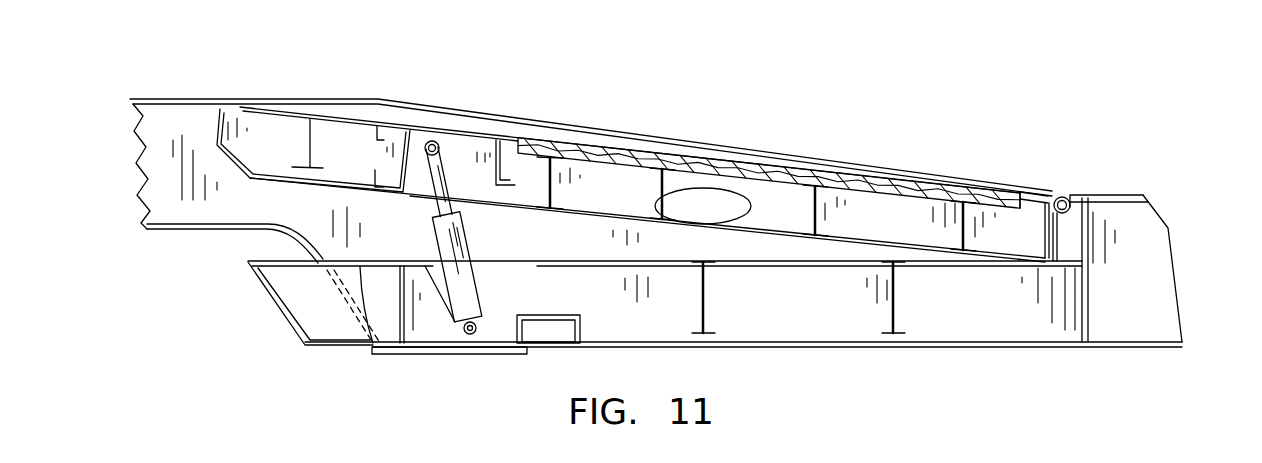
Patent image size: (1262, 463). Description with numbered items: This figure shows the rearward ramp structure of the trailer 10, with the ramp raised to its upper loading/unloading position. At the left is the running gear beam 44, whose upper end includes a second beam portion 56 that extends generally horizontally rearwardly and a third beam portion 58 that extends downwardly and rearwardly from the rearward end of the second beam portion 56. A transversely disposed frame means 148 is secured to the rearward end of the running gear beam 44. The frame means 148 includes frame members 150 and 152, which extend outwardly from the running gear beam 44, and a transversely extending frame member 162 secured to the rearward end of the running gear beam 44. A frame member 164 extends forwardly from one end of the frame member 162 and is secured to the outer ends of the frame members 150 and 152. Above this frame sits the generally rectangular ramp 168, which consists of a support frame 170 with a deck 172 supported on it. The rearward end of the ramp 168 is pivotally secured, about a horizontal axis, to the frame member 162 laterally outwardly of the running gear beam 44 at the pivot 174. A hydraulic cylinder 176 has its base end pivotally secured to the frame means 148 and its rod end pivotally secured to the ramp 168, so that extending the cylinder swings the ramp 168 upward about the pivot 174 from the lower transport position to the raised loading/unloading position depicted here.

The trailer 10 is at (675, 113).
The running gear beam 44 is at (188, 141).
The second beam portion 56 is at (265, 100).
The third beam portion 58 is at (604, 126).
The frame means 148 is at (1138, 173).
The frame member 150 is at (710, 303).
The frame member 152 is at (898, 300).
The transversely extending frame member 162 is at (1158, 276).
The frame member 164 is at (282, 313).
The ramp 168 is at (932, 191).
The support frame 170 is at (812, 205).
The deck 172 is at (762, 154).
The pivot 174 is at (1062, 196).
The hydraulic cylinder 176 is at (467, 244).